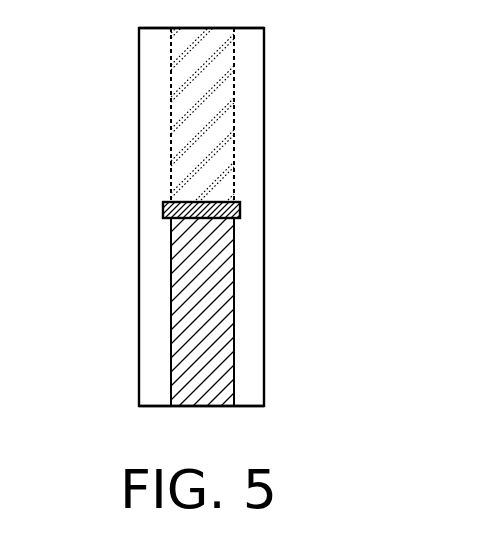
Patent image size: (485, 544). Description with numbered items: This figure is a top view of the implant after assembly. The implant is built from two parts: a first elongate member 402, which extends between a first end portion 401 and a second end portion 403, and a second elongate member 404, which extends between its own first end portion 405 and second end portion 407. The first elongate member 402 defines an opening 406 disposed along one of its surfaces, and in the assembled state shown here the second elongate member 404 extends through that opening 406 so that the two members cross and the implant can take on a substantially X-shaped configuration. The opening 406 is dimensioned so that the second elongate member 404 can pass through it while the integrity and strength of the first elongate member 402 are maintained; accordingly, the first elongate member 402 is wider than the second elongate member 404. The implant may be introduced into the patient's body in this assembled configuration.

The first end portion 401 is at (252, 393).
The first elongate member 402 is at (265, 303).
The second end portion 403 is at (255, 53).
The second elongate member 404 is at (176, 298).
The first end portion 405 is at (171, 391).
The opening 406 is at (240, 209).
The second end portion 407 is at (198, 49).